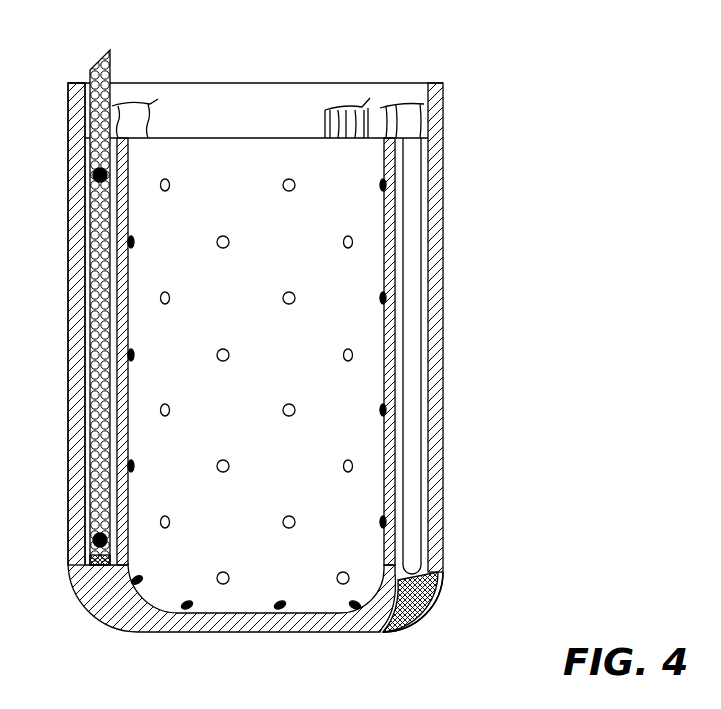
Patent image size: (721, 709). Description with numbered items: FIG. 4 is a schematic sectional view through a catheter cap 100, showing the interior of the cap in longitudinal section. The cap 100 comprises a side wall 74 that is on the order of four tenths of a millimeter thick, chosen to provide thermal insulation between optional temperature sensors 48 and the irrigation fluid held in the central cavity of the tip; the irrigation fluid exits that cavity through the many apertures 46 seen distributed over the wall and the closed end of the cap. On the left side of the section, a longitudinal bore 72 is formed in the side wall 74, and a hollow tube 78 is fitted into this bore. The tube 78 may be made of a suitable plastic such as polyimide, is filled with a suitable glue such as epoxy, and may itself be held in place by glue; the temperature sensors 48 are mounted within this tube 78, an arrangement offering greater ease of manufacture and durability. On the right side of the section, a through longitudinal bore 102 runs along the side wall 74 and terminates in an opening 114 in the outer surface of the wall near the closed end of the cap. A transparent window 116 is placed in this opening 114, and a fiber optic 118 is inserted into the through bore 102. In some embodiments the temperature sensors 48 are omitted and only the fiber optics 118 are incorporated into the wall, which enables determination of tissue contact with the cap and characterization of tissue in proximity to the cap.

The apertures 46 is at (342, 355).
The temperature sensors 48 is at (96, 177).
The longitudinal bores 72 is at (85, 108).
The side wall 74 is at (432, 418).
The hollow tubes 78 is at (110, 72).
The catheter cap 100 is at (443, 472).
The through longitudinal bores 102 is at (430, 528).
The opening 114 is at (410, 617).
The transparent window 116 is at (433, 598).
The fiber optic 118 is at (412, 392).